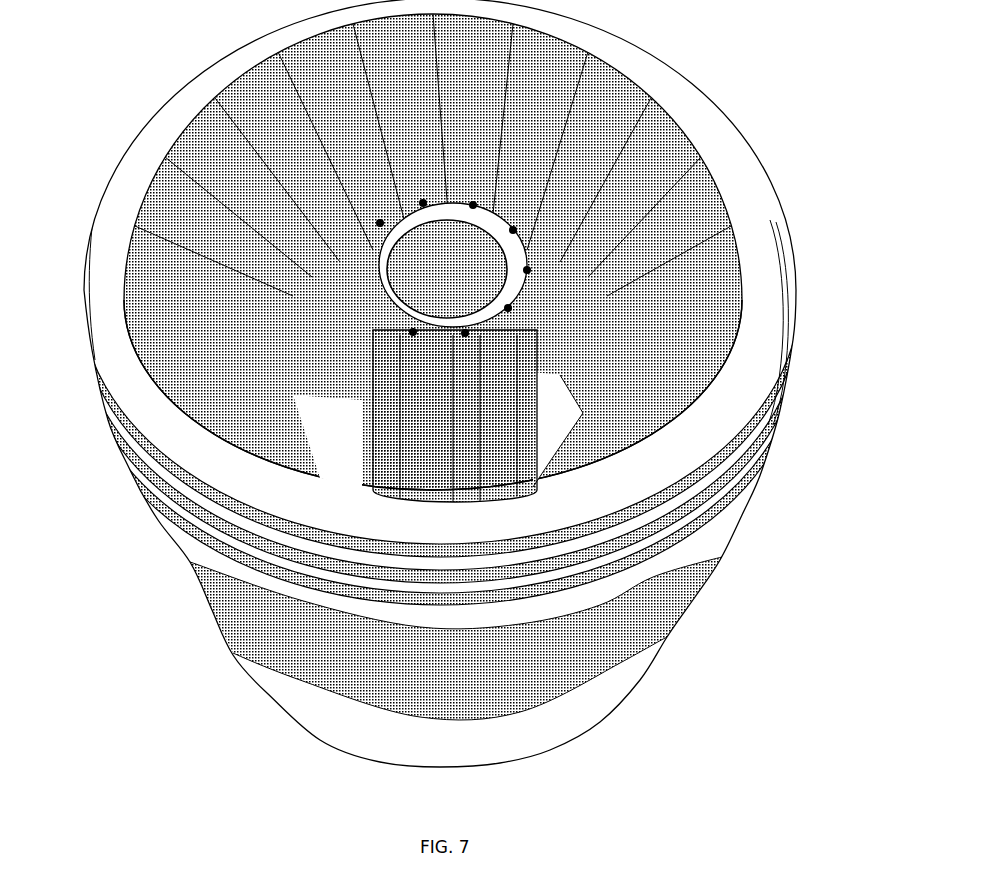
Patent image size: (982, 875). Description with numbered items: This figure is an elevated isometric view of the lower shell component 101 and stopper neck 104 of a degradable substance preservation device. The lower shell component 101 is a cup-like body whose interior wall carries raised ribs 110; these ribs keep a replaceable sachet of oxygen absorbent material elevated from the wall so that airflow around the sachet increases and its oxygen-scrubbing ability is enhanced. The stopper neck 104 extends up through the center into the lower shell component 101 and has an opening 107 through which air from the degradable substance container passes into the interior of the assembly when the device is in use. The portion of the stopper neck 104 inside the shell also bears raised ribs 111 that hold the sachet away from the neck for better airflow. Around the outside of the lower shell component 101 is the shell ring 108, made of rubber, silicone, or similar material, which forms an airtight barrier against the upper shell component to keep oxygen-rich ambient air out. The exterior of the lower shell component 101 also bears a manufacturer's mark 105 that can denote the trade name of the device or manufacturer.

The lower shell component 101 is at (727, 520).
The stopper neck 104 is at (390, 318).
The manufacturer's mark 105 is at (198, 583).
The opening 107 is at (410, 290).
The shell ring 108 is at (760, 367).
The raised ribs 110 is at (668, 183).
The raised ribs 111 is at (408, 402).